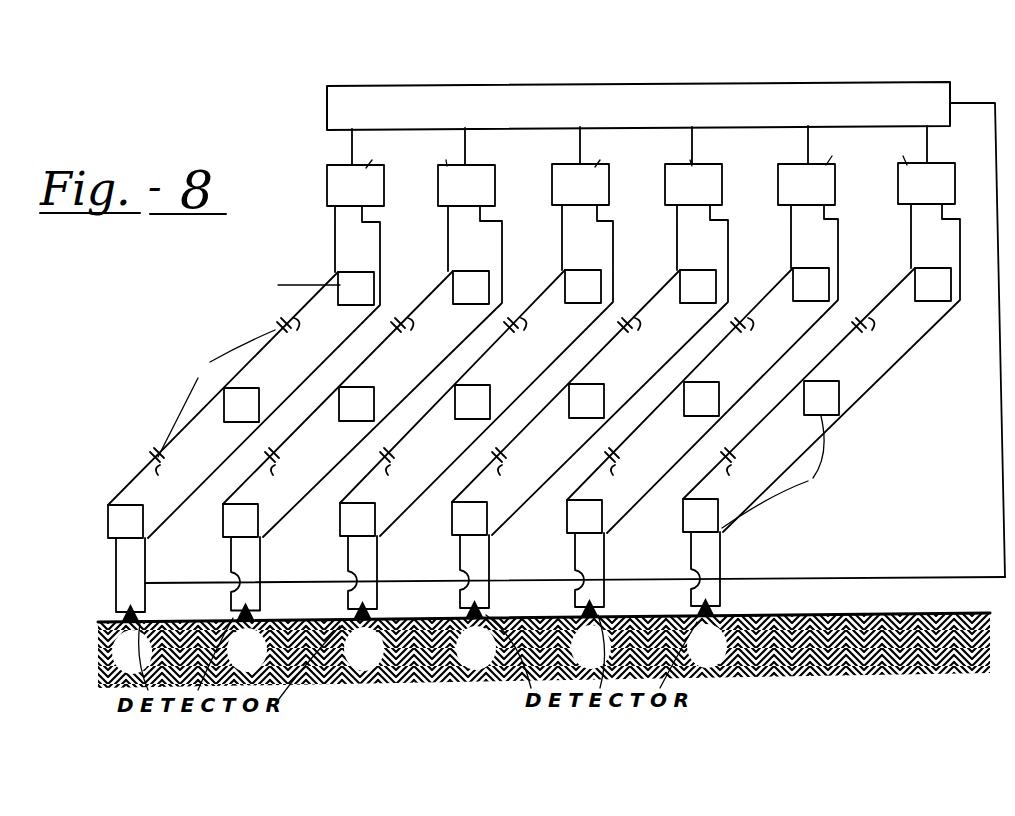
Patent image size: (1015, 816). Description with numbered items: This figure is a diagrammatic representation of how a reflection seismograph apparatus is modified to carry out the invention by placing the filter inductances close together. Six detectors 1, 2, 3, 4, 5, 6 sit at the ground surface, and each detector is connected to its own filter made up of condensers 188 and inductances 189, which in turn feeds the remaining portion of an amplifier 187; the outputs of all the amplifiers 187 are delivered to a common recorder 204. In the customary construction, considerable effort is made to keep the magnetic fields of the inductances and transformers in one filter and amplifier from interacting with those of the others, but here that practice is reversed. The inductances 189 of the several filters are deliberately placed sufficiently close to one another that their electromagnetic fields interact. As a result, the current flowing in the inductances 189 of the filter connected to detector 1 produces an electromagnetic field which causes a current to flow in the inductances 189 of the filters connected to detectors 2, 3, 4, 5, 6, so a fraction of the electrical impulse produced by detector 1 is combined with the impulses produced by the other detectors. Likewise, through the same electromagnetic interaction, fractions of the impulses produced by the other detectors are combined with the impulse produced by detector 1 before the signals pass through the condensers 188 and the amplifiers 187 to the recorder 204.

The recorder 204 is at (585, 83).
The remaining portions of the amplifiers 187 is at (641, 166).
The condensers 188 is at (490, 398).
The inductances 189 is at (687, 532).
The detector 1 is at (129, 640).
The detector 2 is at (244, 639).
The detector 3 is at (361, 637).
The detector 4 is at (473, 636).
The detector 5 is at (588, 635).
The detector 6 is at (704, 634).